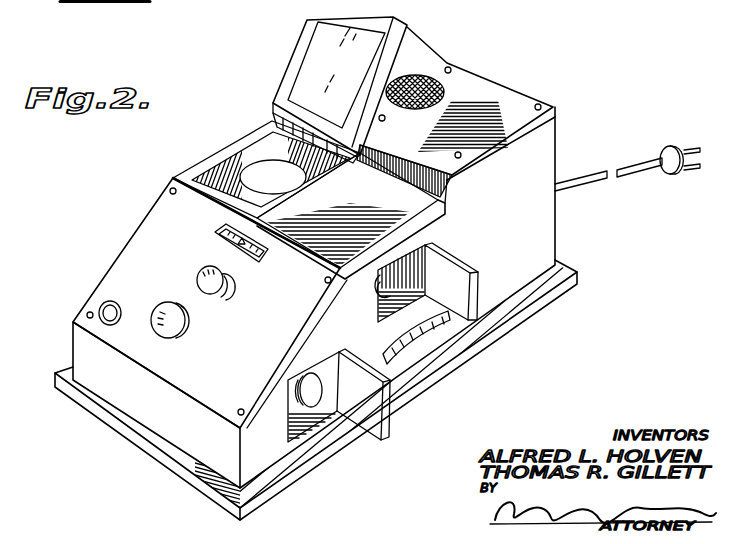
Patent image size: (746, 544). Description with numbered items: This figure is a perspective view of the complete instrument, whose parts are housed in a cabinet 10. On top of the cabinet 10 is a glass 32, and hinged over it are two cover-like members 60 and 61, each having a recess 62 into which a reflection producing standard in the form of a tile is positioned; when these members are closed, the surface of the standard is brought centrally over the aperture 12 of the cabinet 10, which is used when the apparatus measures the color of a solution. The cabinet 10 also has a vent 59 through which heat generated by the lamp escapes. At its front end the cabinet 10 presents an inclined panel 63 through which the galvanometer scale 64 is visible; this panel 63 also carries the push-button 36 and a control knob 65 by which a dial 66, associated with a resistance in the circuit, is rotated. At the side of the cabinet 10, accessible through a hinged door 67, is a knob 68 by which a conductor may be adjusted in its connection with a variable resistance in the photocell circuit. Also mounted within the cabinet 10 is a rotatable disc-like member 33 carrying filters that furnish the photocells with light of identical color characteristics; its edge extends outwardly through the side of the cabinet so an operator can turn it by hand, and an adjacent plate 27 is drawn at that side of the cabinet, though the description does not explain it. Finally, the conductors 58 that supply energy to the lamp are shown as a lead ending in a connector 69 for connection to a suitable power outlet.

The cabinet 10 is at (543, 232).
The aperture 12 is at (270, 161).
The cover plate 27 is at (455, 290).
The glass 32 is at (222, 167).
The rotatable disc-like member 33 is at (442, 330).
The push-button 36 is at (105, 301).
The conductors 58 is at (595, 173).
The vent 59 is at (433, 90).
The cover-like member 60 is at (300, 50).
The cover-like member 61 is at (407, 212).
The recess 62 is at (314, 69).
The inclined panel 63 is at (152, 233).
The galvanometer scale 64 is at (238, 236).
The control knob 65 is at (167, 323).
The dial 66 is at (235, 289).
The hinged door 67 is at (372, 410).
The knob 68 is at (313, 387).
The connector 69 is at (676, 147).